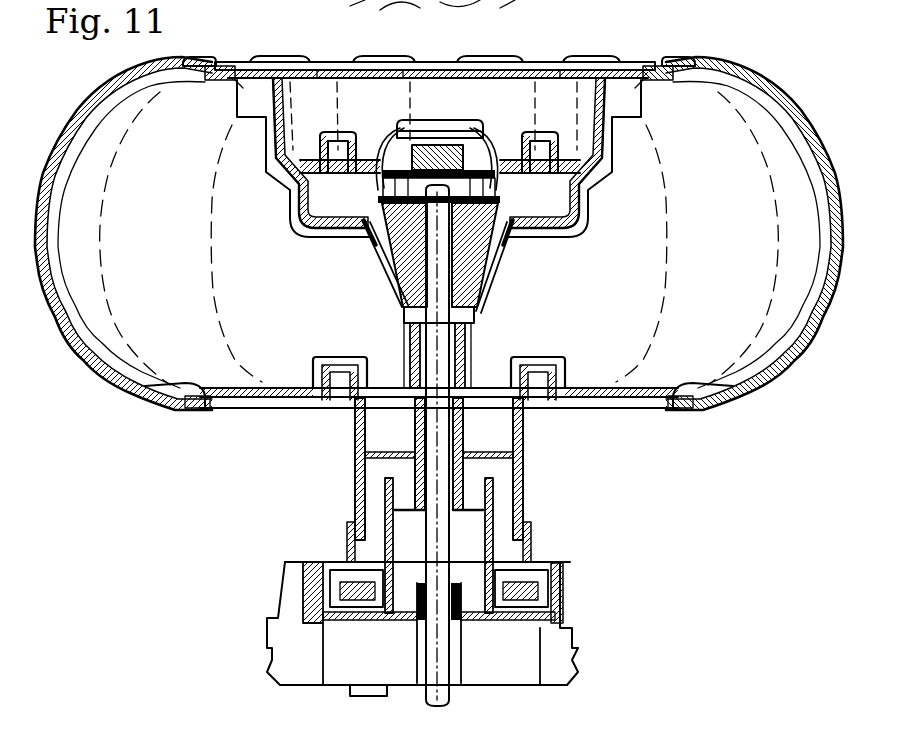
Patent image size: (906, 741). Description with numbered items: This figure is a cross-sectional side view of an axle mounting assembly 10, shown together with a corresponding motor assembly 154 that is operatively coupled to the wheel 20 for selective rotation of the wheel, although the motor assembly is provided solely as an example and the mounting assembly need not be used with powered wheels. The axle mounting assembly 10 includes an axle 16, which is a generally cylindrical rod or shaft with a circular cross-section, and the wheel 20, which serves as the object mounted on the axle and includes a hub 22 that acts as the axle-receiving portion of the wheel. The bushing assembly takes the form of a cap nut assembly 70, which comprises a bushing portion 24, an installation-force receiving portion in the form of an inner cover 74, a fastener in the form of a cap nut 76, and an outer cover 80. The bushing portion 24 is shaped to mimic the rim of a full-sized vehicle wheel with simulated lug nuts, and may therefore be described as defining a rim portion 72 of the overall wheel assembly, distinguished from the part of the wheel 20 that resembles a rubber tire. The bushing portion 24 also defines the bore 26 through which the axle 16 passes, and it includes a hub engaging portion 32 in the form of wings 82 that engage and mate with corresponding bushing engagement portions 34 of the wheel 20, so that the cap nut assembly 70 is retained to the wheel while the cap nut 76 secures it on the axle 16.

The axle mounting assembly 10 is at (813, 34).
The axle 16 is at (450, 688).
The wheel 20 is at (812, 101).
The hub 22 is at (325, 210).
The bushing portion 24 is at (548, 60).
The bore 26 is at (432, 252).
The hub engaging portion 32 is at (376, 237).
The bushing engagement portions 34 is at (502, 230).
The cap nut assembly 70 is at (628, 142).
The rim portion 72 is at (335, 62).
The inner cover 74 is at (407, 158).
The cap nut 76 is at (463, 186).
The outer cover 80 is at (438, 120).
The wings 82 is at (398, 288).
The motor assembly 154 is at (570, 605).